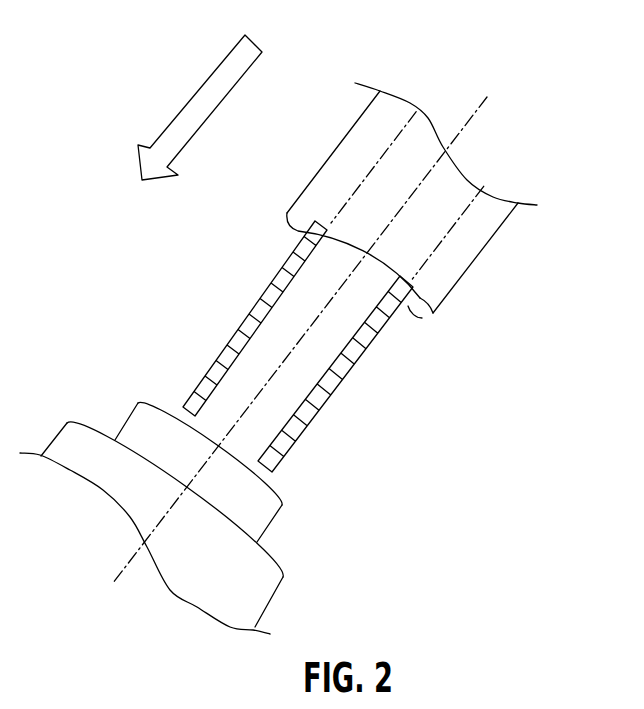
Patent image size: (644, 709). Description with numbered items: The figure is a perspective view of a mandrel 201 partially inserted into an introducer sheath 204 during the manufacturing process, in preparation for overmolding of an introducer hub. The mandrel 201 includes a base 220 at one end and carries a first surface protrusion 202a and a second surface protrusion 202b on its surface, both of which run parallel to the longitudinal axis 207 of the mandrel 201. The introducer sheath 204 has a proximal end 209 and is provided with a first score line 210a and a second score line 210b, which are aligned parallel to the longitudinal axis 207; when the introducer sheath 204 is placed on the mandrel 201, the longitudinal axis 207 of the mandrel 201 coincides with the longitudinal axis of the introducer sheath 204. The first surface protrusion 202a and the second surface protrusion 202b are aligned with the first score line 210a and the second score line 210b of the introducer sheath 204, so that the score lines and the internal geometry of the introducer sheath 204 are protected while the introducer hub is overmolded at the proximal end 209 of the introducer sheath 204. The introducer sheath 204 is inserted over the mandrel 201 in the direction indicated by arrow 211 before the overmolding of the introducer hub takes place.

The mandrel 201 is at (285, 343).
The first surface protrusion 202a is at (225, 345).
The second surface protrusion 202b is at (343, 378).
The introducer sheath 204 is at (431, 237).
The longitudinal axis 207 is at (463, 130).
The proximal end 209 is at (433, 316).
The first score line 210a is at (353, 188).
The second score line 210b is at (440, 245).
The arrow 211 is at (203, 97).
The base 220 is at (258, 516).